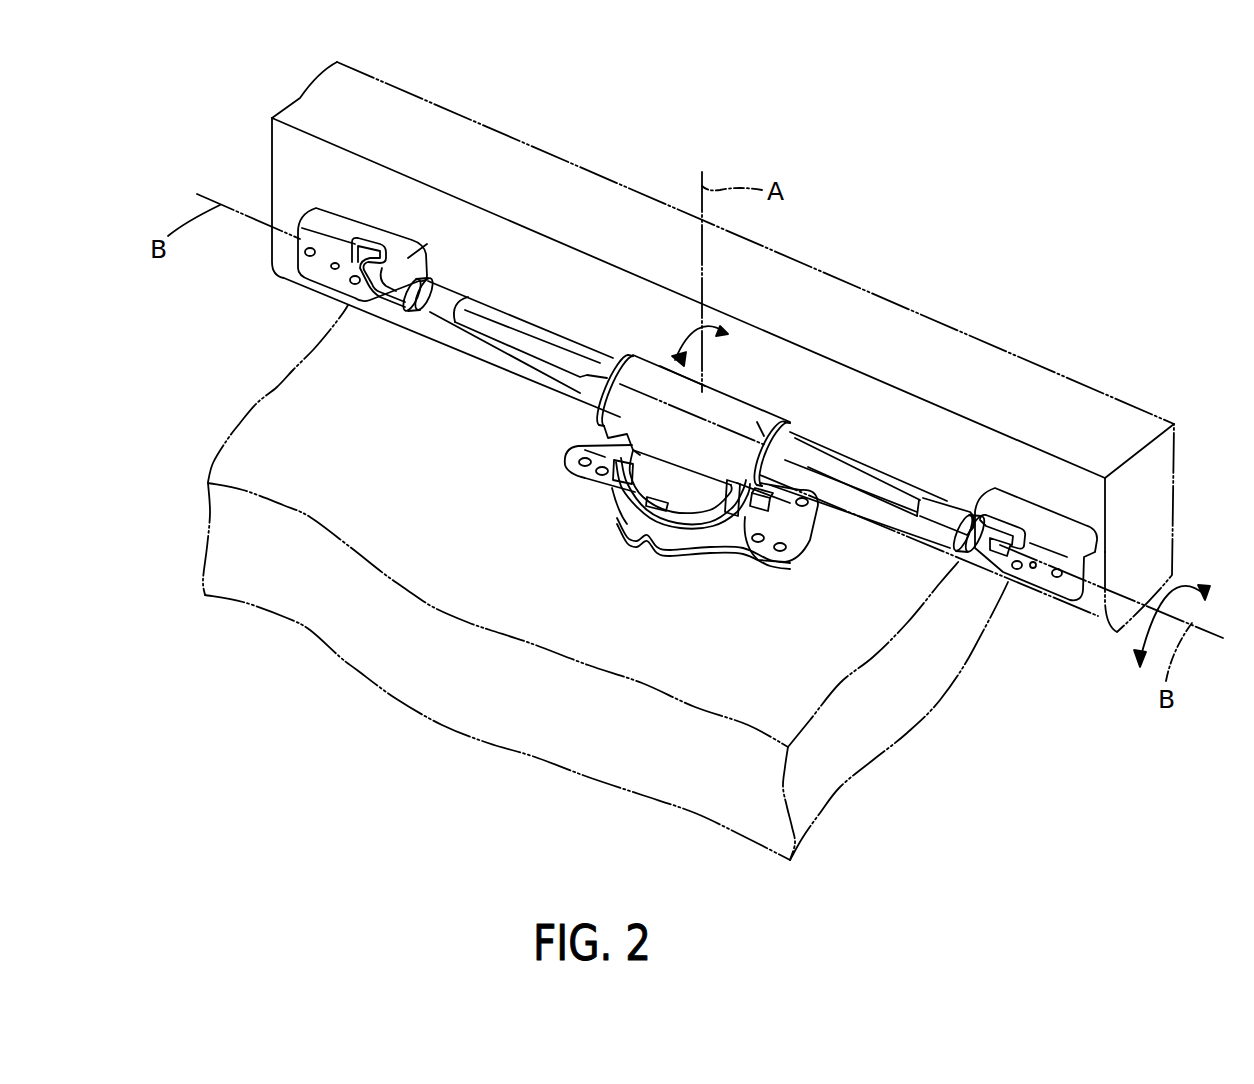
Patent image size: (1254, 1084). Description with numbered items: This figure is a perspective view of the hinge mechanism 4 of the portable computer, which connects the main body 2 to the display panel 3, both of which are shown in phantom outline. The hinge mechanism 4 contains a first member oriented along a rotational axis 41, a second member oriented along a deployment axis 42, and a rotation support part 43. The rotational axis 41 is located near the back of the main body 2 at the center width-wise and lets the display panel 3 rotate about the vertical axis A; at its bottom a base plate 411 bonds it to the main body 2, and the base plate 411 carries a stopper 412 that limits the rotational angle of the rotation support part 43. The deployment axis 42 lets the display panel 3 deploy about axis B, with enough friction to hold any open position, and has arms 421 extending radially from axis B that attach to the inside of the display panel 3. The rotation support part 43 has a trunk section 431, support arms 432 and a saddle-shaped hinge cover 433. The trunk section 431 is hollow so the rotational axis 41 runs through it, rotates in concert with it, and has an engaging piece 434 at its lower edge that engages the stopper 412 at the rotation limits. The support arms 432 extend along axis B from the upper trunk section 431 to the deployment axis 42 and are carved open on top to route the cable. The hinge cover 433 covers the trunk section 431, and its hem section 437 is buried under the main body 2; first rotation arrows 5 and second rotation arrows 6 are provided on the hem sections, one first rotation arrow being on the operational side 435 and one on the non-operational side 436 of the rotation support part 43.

The main body 2 is at (955, 678).
The display panel 3 is at (557, 156).
The hinge mechanism 4 is at (773, 358).
The rotational axis 41 is at (676, 528).
The base plate 411 is at (568, 458).
The stopper 412 is at (798, 523).
The deployment axis 42 is at (421, 280).
The arms 421 is at (327, 222).
The rotation support part 43 is at (633, 354).
The trunk section 431 is at (727, 523).
The support arm 432 is at (489, 318).
The hinge cover 433 is at (737, 404).
The engaging piece 434 is at (745, 524).
The operational side 435 is at (633, 412).
The non-operational side 436 is at (759, 423).
The hem section 437 is at (637, 490).
The first rotation arrows 5 is at (632, 510).
The second rotation arrows 6 is at (612, 492).